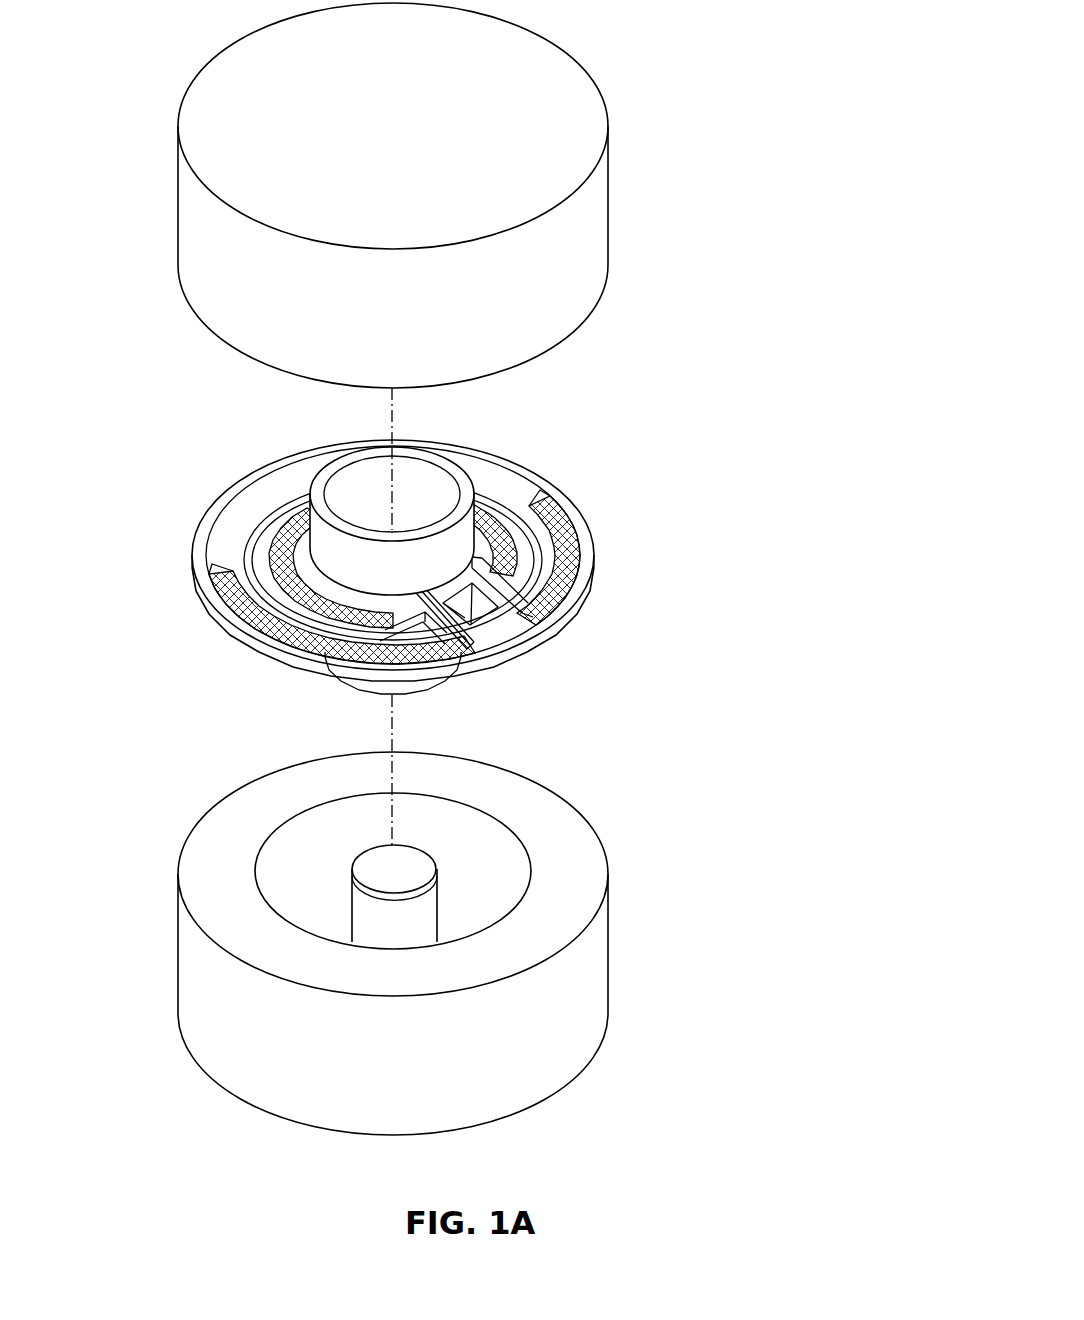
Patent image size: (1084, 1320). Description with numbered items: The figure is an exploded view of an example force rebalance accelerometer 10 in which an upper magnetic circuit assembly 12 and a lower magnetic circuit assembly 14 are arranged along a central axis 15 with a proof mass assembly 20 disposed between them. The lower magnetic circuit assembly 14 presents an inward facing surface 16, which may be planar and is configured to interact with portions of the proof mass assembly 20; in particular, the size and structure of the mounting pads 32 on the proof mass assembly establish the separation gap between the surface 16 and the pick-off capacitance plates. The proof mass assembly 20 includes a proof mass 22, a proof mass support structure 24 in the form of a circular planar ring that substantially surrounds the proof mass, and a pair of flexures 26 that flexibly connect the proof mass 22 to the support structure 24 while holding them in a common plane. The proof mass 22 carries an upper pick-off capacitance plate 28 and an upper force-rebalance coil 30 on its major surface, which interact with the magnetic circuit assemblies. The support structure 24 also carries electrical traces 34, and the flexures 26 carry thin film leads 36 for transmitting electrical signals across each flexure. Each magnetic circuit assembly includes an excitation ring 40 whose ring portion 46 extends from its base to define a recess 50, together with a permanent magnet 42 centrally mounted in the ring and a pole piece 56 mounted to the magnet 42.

The accelerometer 10 is at (826, 82).
The upper magnetic circuit assembly 12 is at (578, 252).
The lower magnetic circuit assembly 14 is at (423, 943).
The central axis 15 is at (392, 425).
The inward facing surface 16 is at (232, 845).
The proof mass assembly 20 is at (556, 436).
The proof mass 22 is at (510, 525).
The proof mass support structure 24 is at (292, 468).
The flexures 26 is at (500, 573).
The upper pick-off capacitance plate 28 is at (277, 548).
The upper force-rebalance coil 30 is at (433, 462).
The mounting pads 32 is at (210, 572).
The electrical traces 34 is at (240, 616).
The thin film leads 36 is at (498, 607).
The excitation ring 40 is at (211, 1005).
The permanent magnet 42 is at (497, 854).
The ring portion 46 is at (440, 623).
The recess 50 is at (492, 862).
The pole piece 56 is at (394, 874).